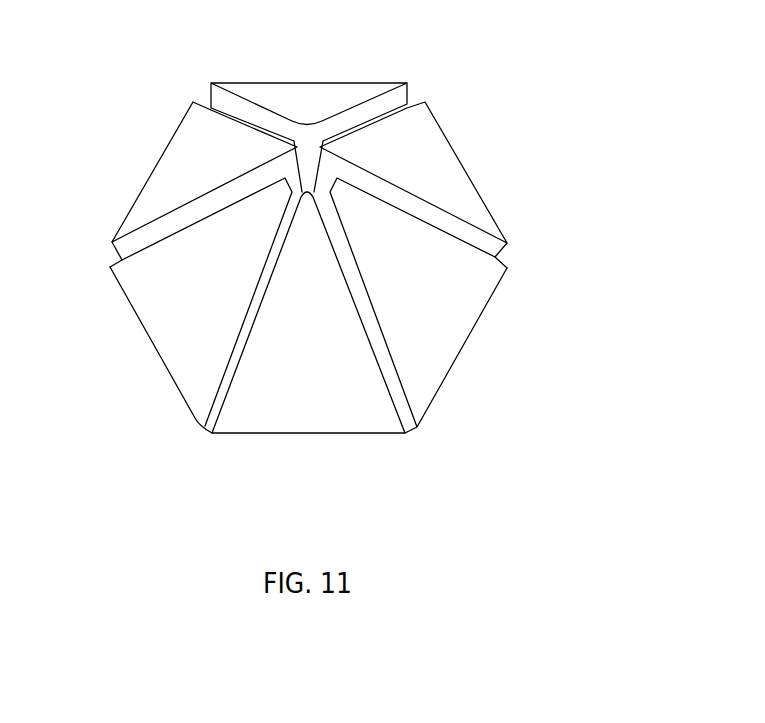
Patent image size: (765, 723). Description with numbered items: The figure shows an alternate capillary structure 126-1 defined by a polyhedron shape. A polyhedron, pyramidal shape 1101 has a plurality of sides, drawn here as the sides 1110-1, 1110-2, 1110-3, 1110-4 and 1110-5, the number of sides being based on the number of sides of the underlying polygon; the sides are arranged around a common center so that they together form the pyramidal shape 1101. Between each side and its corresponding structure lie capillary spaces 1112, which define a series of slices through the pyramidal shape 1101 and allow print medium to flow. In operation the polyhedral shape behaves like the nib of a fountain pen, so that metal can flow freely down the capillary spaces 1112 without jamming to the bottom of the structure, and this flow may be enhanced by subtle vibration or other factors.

The pyramidal shape 1101 is at (373, 251).
The side 1110-1 is at (336, 102).
The side 1110-2 is at (184, 167).
The side 1110-3 is at (176, 321).
The side 1110-4 is at (309, 397).
The side 1110-5 is at (442, 337).
The alternate capillary structure 126-1 is at (443, 138).
The capillary spaces 1112 is at (235, 108).